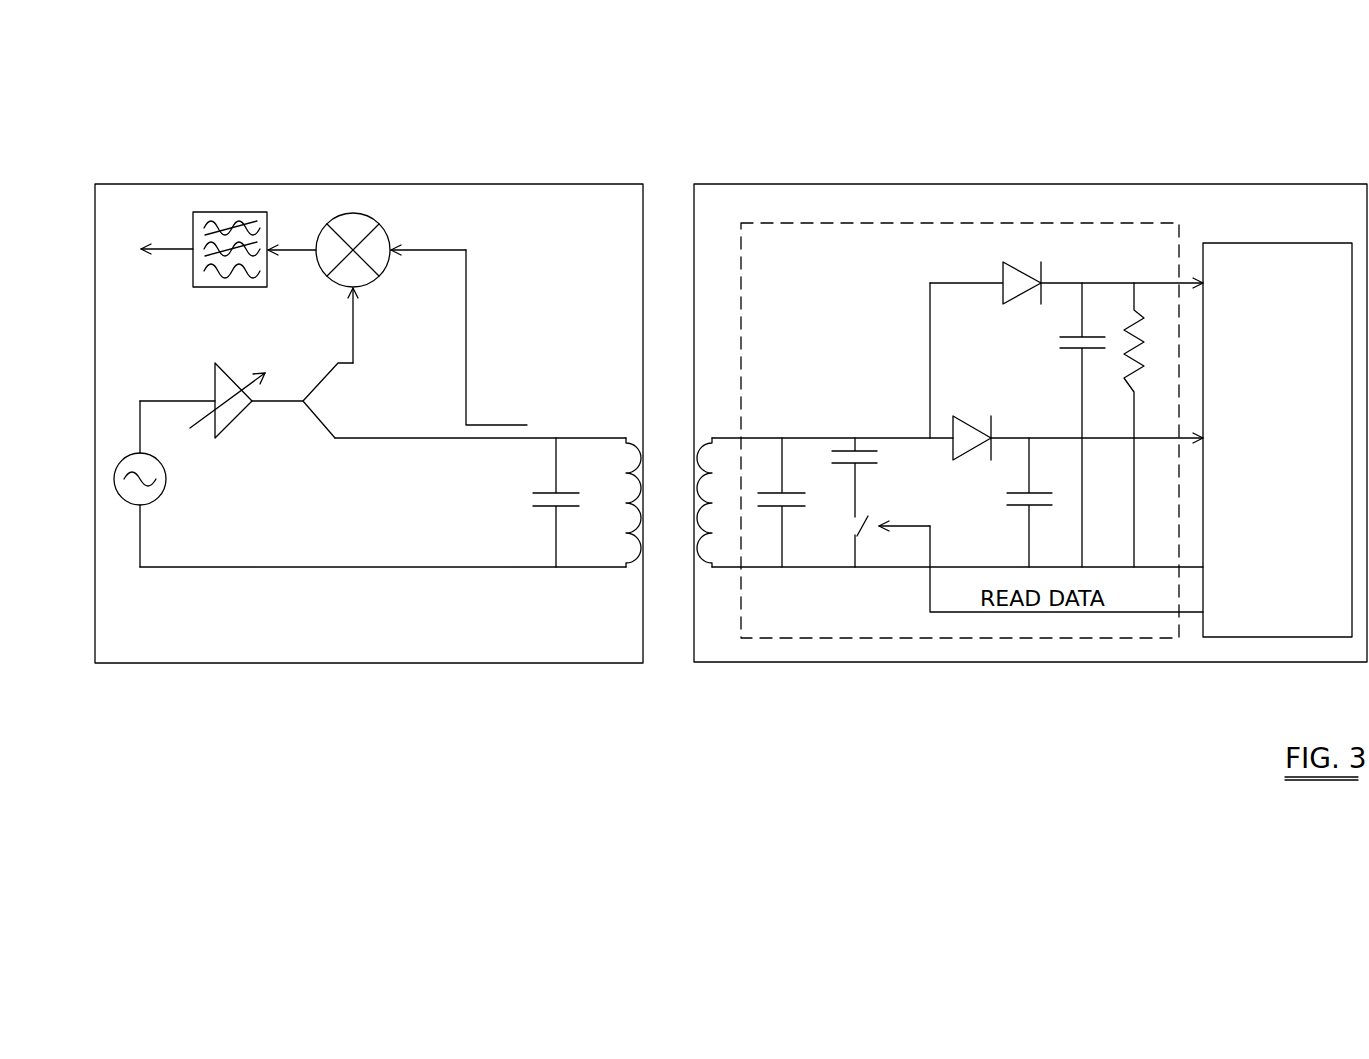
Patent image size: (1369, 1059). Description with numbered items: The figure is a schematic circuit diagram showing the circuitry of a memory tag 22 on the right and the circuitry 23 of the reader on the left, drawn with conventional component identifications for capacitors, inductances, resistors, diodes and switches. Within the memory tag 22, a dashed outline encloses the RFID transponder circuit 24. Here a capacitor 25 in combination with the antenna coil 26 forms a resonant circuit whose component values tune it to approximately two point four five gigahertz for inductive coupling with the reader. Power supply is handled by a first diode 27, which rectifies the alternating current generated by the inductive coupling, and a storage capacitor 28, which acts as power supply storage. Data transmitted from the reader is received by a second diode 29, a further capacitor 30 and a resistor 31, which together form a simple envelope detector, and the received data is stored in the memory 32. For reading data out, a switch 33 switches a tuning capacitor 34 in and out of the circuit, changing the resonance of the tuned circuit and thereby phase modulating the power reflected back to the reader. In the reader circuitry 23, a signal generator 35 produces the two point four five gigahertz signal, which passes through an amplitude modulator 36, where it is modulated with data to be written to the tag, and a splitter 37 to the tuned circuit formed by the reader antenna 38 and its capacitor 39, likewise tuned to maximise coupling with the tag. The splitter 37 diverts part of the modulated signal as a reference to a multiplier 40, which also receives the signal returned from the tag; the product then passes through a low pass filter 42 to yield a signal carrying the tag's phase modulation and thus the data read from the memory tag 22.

The memory tag 22 is at (1233, 169).
The circuitry of the reader 23 is at (565, 181).
The RFID transponder circuit 24 is at (1083, 640).
The capacitor C2 25 is at (795, 507).
The antenna coil L2 26 is at (703, 550).
The diode D1 27 is at (965, 460).
The capacitor C4 28 is at (1008, 505).
The diode D2 29 is at (1003, 283).
The capacitor C5 30 is at (1068, 337).
The resistor R1 31 is at (1142, 316).
The memory 32 is at (1277, 440).
The switch S1 33 is at (862, 537).
The capacitor C3 34 is at (838, 448).
The signal generator 35 is at (127, 503).
The amplitude modulator 36 is at (215, 383).
The splitter 37 is at (325, 373).
The antenna L1 38 is at (632, 520).
The capacitor C1 39 is at (562, 508).
The multiplier 40 is at (350, 213).
The low pass filter 42 is at (230, 213).